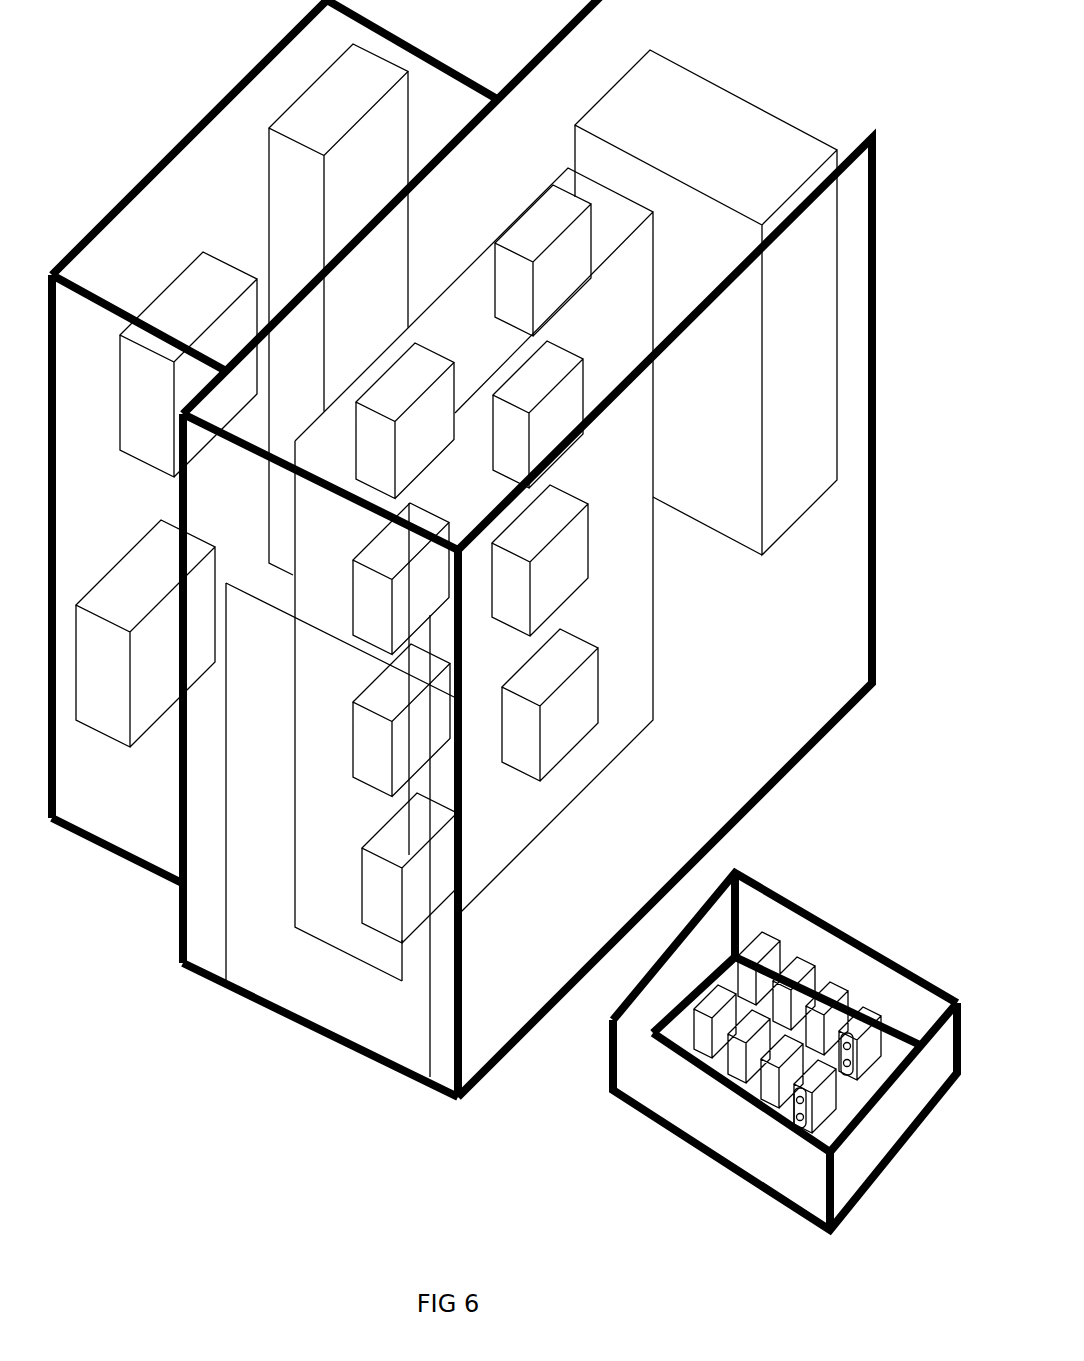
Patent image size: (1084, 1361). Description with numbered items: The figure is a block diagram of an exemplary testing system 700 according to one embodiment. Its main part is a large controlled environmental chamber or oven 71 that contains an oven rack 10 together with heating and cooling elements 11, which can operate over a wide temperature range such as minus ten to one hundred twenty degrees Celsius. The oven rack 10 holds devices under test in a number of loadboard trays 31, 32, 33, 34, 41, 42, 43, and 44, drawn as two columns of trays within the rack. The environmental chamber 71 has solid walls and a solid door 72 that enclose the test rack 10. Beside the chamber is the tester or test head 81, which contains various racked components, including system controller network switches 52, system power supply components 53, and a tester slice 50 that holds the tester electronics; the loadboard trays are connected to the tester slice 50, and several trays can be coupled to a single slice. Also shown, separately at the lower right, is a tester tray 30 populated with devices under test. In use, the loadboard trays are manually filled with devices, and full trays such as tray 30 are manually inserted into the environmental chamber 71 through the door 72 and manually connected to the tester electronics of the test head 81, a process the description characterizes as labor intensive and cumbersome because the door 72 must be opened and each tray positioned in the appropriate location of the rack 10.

The housing enclosure 700 is at (279, 442).
The oven rack 10 is at (600, 475).
The heating and cooling elements 11 is at (684, 144).
The tester tray 30 is at (728, 1147).
The loadboard tray 31 is at (551, 292).
The loadboard tray 32 is at (550, 430).
The loadboard tray 33 is at (548, 590).
The loadboard tray 34 is at (559, 737).
The loadboard tray 41 is at (358, 457).
The loadboard tray 42 is at (355, 619).
The loadboard tray 43 is at (363, 759).
The loadboard tray 44 is at (363, 909).
The tester slice 50 is at (328, 119).
The system controller network switch 52 is at (177, 315).
The system power supply component 53 is at (131, 590).
The environmental chamber 71 is at (637, 805).
The door 72 is at (261, 722).
The tester or test head 81 is at (116, 810).